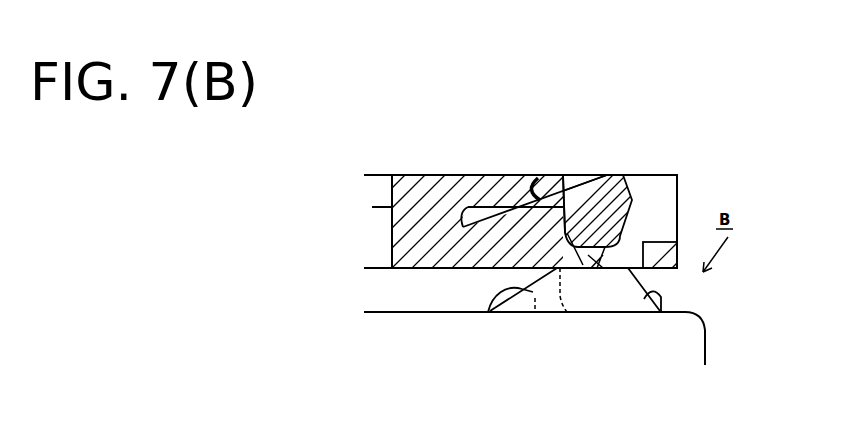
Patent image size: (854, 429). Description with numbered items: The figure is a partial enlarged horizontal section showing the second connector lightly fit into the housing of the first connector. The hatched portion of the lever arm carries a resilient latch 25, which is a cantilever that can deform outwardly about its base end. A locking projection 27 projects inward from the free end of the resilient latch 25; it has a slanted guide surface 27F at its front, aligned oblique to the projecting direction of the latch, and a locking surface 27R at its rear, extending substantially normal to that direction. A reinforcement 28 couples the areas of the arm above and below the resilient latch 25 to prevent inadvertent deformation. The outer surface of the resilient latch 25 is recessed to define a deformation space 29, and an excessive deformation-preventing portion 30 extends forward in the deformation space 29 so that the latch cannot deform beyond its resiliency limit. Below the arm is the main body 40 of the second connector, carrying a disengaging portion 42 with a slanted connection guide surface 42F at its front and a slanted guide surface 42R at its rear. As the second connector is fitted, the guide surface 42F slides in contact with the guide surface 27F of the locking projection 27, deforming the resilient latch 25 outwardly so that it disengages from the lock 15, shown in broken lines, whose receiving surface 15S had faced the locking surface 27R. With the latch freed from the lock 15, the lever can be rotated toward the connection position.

The resilient latch 25 is at (620, 175).
The locking projection 27 is at (597, 268).
The locking surface 27R is at (564, 175).
The slanted guide surface 27F is at (607, 175).
The reinforcement 28 is at (678, 250).
The deformation space 29 is at (560, 184).
The excessive deformation-preventing portion 30 is at (528, 188).
The main body 40 is at (678, 332).
The disengaging portion 42 is at (580, 292).
The slanted connection guide surface 42F is at (489, 312).
The slanted guide surface 42R is at (657, 312).
The lock 15 is at (535, 312).
The receiving surface 15S is at (566, 312).